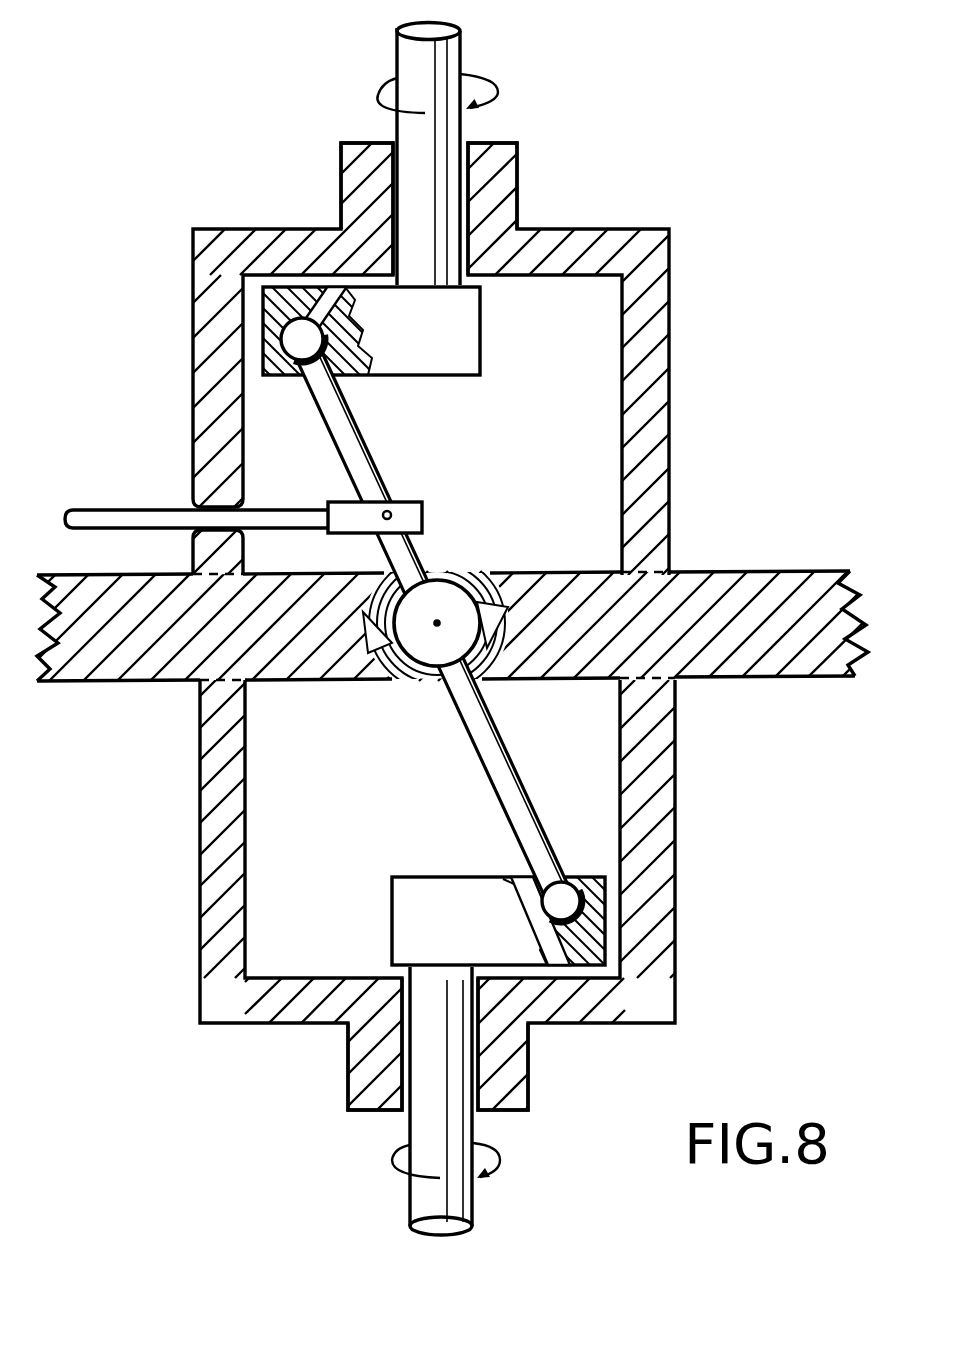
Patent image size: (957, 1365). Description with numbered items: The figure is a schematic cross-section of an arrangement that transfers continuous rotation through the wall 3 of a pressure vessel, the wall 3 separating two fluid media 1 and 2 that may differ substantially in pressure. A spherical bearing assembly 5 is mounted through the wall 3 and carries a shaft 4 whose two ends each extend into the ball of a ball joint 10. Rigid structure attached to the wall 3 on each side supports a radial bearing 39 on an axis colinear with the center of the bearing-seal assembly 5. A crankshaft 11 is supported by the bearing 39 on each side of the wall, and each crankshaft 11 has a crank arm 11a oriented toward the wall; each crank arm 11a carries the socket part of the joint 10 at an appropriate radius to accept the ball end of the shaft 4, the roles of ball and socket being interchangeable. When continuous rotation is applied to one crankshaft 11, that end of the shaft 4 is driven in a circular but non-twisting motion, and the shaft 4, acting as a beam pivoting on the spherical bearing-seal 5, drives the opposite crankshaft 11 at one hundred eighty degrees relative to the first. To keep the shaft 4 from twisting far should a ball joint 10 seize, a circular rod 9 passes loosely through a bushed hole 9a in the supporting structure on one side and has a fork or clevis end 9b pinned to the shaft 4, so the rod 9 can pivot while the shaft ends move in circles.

The fluid medium 1 is at (590, 375).
The fluid medium 2 is at (318, 892).
The wall 3 is at (98, 653).
The shaft 4 is at (476, 753).
The spherical bearing assembly 5 is at (458, 570).
The circular rod 9 is at (108, 508).
The bushed hole 9a is at (190, 503).
The fork or clevis end 9b is at (400, 500).
The ball joint 10 is at (302, 358).
The crankshaft 11 is at (393, 42).
The crank arm 11a is at (263, 332).
The radial bearing 39 is at (393, 140).